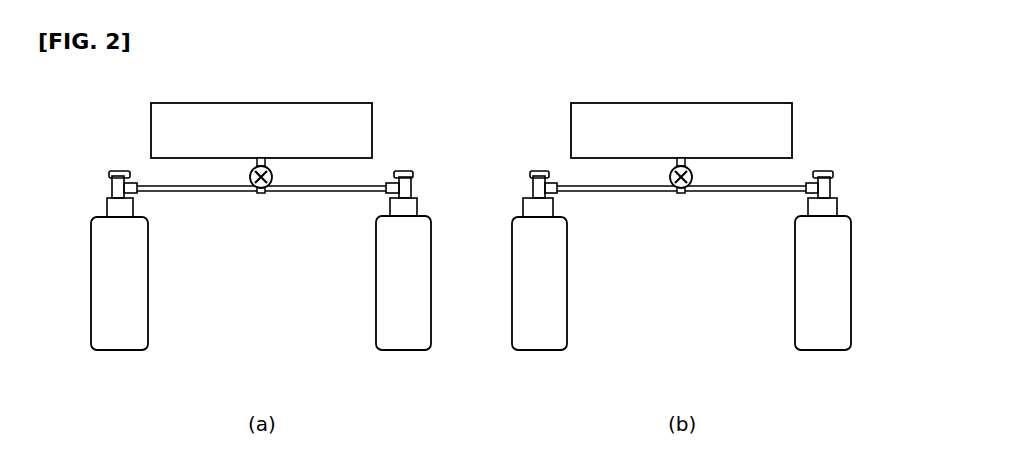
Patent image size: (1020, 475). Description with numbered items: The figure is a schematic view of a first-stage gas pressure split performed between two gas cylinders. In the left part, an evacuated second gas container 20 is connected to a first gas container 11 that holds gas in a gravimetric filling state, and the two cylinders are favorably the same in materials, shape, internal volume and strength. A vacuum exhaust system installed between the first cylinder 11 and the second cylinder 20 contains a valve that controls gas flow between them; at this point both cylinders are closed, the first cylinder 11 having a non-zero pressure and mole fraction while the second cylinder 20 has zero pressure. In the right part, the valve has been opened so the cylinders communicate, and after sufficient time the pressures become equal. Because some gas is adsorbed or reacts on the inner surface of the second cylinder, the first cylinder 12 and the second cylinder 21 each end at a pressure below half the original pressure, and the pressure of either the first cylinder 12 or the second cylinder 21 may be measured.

The first gas container 11 is at (97, 245).
The second gas container 20 is at (428, 247).
The first gas container after first gas pressure distribution process 12 is at (515, 330).
The second gas container after first gas pressure distribution process 21 is at (845, 328).